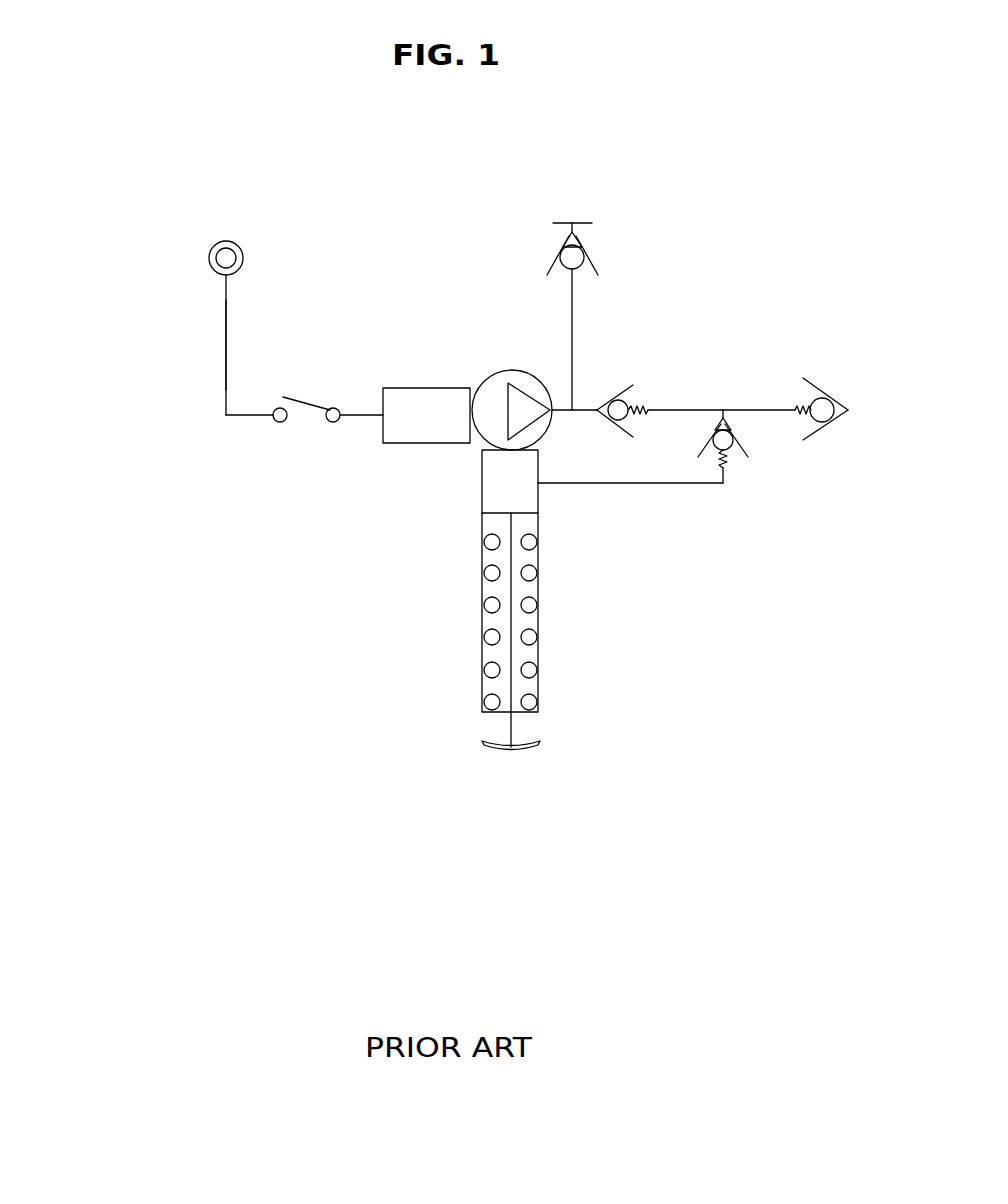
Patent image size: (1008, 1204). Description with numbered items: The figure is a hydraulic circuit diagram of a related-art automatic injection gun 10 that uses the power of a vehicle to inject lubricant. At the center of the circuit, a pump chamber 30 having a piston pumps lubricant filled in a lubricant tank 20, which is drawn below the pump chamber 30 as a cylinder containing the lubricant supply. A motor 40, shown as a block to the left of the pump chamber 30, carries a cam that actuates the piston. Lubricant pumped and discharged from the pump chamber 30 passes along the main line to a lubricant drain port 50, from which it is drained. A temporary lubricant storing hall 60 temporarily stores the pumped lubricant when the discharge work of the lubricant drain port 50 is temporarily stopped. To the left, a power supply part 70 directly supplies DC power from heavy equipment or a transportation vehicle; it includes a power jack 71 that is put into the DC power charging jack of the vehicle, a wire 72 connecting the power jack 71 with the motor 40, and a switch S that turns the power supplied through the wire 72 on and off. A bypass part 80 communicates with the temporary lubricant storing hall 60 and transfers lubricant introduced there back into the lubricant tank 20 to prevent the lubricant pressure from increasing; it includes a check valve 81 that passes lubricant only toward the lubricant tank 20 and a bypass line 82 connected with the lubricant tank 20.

The gun 10 is at (445, 222).
The lubricant tank 20 is at (483, 637).
The pump chamber 30 is at (488, 375).
The motor 40 is at (407, 388).
The lubricant drain port 50 is at (615, 400).
The temporary lubricant storing hall 60 is at (697, 410).
The power supply part 70 is at (88, 237).
The power jack 71 is at (211, 251).
The wire 72 is at (226, 345).
The switch S is at (297, 400).
The bypass part 80 is at (822, 600).
The check valve 81 is at (730, 460).
The bypass line 82 is at (675, 483).